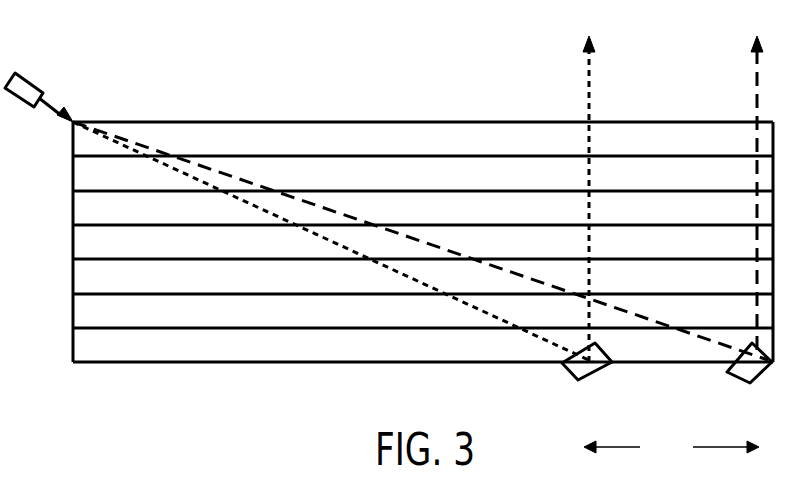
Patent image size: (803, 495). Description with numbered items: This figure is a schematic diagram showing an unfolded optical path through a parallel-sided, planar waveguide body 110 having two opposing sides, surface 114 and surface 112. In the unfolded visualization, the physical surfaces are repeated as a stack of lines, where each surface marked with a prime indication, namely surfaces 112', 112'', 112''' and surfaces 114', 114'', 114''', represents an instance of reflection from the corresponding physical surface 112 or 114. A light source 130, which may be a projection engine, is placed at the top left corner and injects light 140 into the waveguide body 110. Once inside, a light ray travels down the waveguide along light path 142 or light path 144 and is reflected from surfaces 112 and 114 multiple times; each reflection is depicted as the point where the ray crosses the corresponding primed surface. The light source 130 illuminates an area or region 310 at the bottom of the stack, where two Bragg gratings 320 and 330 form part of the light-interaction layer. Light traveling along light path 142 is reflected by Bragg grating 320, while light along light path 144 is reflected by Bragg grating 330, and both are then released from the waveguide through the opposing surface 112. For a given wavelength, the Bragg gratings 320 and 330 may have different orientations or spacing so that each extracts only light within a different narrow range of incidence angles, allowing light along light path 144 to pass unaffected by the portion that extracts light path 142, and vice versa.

The waveguide body 110 is at (187, 348).
The surface 112 is at (393, 308).
The surface (first reflection instance) 112' is at (393, 238).
The surface (second reflection instance) 112'' is at (393, 171).
The surface (third reflection instance) 112''' is at (423, 100).
The surface 114 is at (394, 384).
The surface (first reflection instance) 114' is at (393, 271).
The surface (second reflection instance) 114'' is at (393, 204).
The surface (third reflection instance) 114''' is at (393, 136).
The light source 130 is at (24, 90).
The light 140 is at (50, 100).
The light path 142 is at (351, 199).
The light path 144 is at (420, 198).
The illuminated area or region 310 is at (671, 447).
The Bragg grating 320 is at (566, 378).
The Bragg grating 330 is at (738, 378).